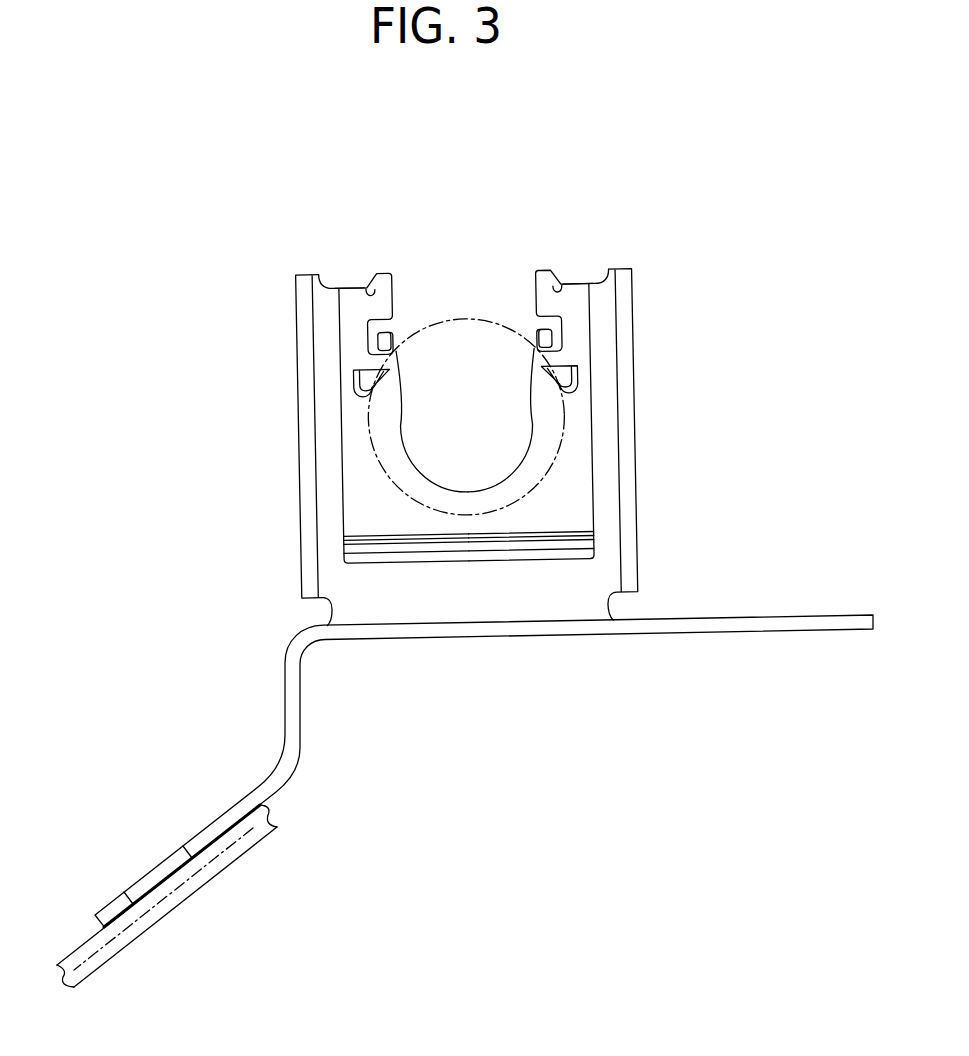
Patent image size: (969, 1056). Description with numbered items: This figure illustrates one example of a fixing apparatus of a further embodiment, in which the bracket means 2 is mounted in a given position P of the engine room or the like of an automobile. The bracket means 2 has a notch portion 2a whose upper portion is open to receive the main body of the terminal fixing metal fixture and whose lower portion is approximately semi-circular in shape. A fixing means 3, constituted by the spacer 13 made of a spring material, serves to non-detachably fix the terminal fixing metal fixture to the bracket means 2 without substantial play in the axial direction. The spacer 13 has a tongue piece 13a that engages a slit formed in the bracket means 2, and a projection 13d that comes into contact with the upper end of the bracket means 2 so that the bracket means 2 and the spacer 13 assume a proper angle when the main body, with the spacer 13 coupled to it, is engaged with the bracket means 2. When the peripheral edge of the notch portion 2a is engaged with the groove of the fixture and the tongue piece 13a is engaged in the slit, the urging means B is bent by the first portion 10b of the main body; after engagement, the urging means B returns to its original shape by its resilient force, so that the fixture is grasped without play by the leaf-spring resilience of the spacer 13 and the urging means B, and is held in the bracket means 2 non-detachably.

The bracket means 2 is at (610, 493).
The notch portion 2a is at (428, 446).
The fixing means 3 is at (575, 440).
The spacer 13 is at (557, 416).
The tongue piece 13a is at (380, 340).
The projection 13d is at (347, 288).
The first portion 10b is at (458, 318).
The urging means B is at (355, 380).
The given position P is at (170, 900).